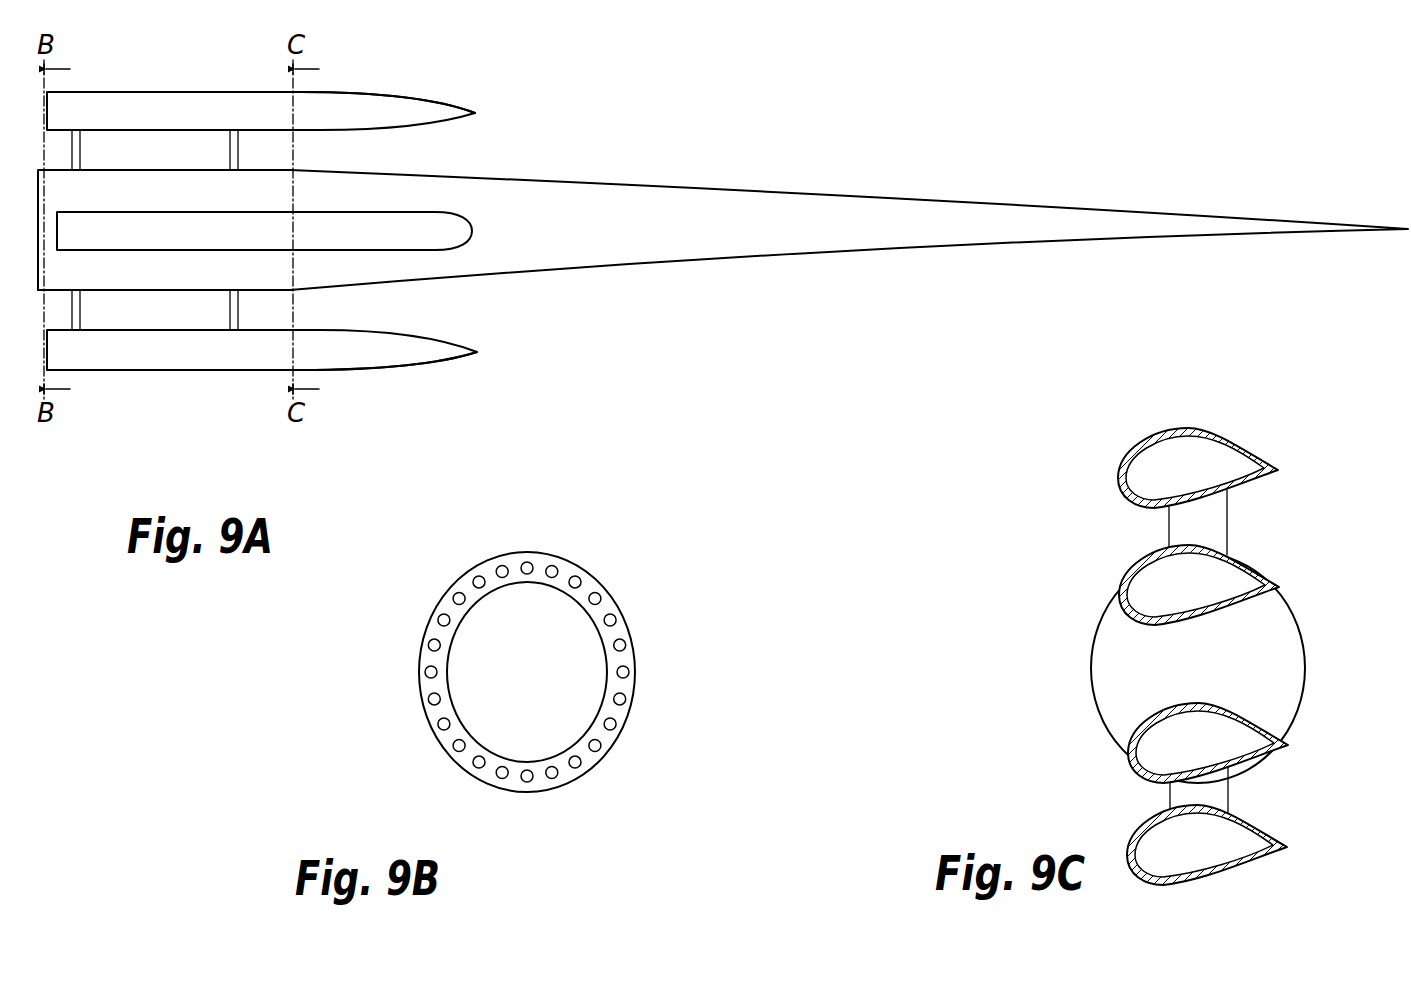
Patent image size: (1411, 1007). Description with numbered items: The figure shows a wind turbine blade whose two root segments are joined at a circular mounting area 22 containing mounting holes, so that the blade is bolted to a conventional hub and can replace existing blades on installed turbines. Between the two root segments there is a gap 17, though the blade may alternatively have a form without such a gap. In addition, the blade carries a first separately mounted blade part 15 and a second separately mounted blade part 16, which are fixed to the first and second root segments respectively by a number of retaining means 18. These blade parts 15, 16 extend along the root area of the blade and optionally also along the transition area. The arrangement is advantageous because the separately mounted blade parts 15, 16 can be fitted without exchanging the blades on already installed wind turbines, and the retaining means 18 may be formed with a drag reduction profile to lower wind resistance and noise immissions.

In FIG. 9A, the first separately mounted blade part 15 is at (125, 102).
In FIG. 9C, the first separately mounted blade part 15 is at (1247, 443).
In FIG. 9A, the second separately mounted blade part 16 is at (135, 358).
In FIG. 9C, the second separately mounted blade part 16 is at (1260, 820).
In FIG. 9A, the gap 17 is at (430, 228).
In FIG. 9A, the retaining means 18 is at (80, 155).
In FIG. 9C, the retaining means 18 is at (1222, 512).
In FIG. 9B, the mounting area 22 is at (565, 567).